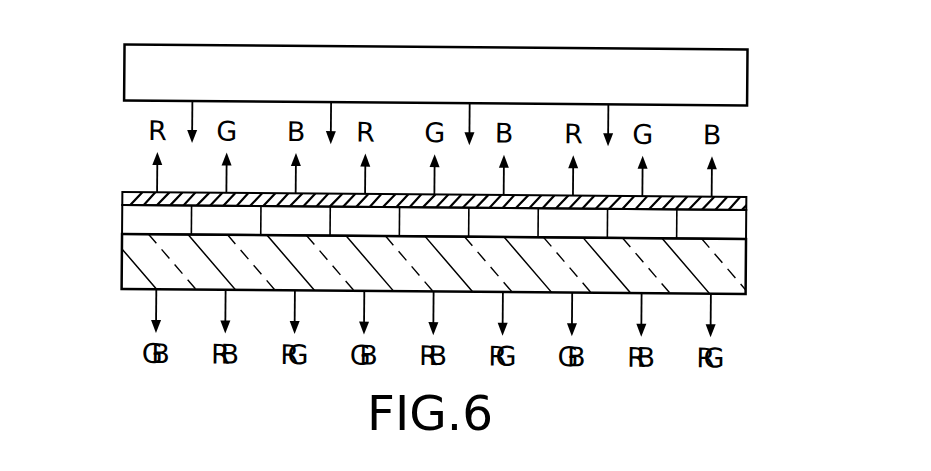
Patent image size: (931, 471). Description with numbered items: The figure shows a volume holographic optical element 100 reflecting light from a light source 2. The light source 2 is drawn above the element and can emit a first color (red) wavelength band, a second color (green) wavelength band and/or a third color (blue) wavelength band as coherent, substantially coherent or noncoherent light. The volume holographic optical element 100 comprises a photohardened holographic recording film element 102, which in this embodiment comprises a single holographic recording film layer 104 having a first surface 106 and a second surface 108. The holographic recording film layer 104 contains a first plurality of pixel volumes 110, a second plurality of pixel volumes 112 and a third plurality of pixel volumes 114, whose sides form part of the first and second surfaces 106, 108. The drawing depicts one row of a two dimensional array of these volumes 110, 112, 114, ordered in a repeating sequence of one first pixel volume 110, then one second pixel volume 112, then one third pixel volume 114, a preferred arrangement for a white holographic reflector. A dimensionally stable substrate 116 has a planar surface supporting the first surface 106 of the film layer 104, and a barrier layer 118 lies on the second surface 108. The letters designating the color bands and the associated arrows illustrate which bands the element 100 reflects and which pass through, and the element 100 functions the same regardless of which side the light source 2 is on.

The light source 2 is at (747, 73).
The volume holographic optical element 100 is at (727, 176).
The photohardened holographic recording film element 102 is at (120, 192).
The holographic recording film layer 104 is at (467, 268).
The first surface 106 is at (140, 235).
The second surface 108 is at (138, 203).
The first plurality of pixel volumes 110 is at (368, 236).
The second plurality of pixel volumes 112 is at (437, 236).
The third plurality of pixel volumes 114 is at (505, 236).
The dimensionally stable substrate 116 is at (747, 261).
The barrier layer 118 is at (747, 199).